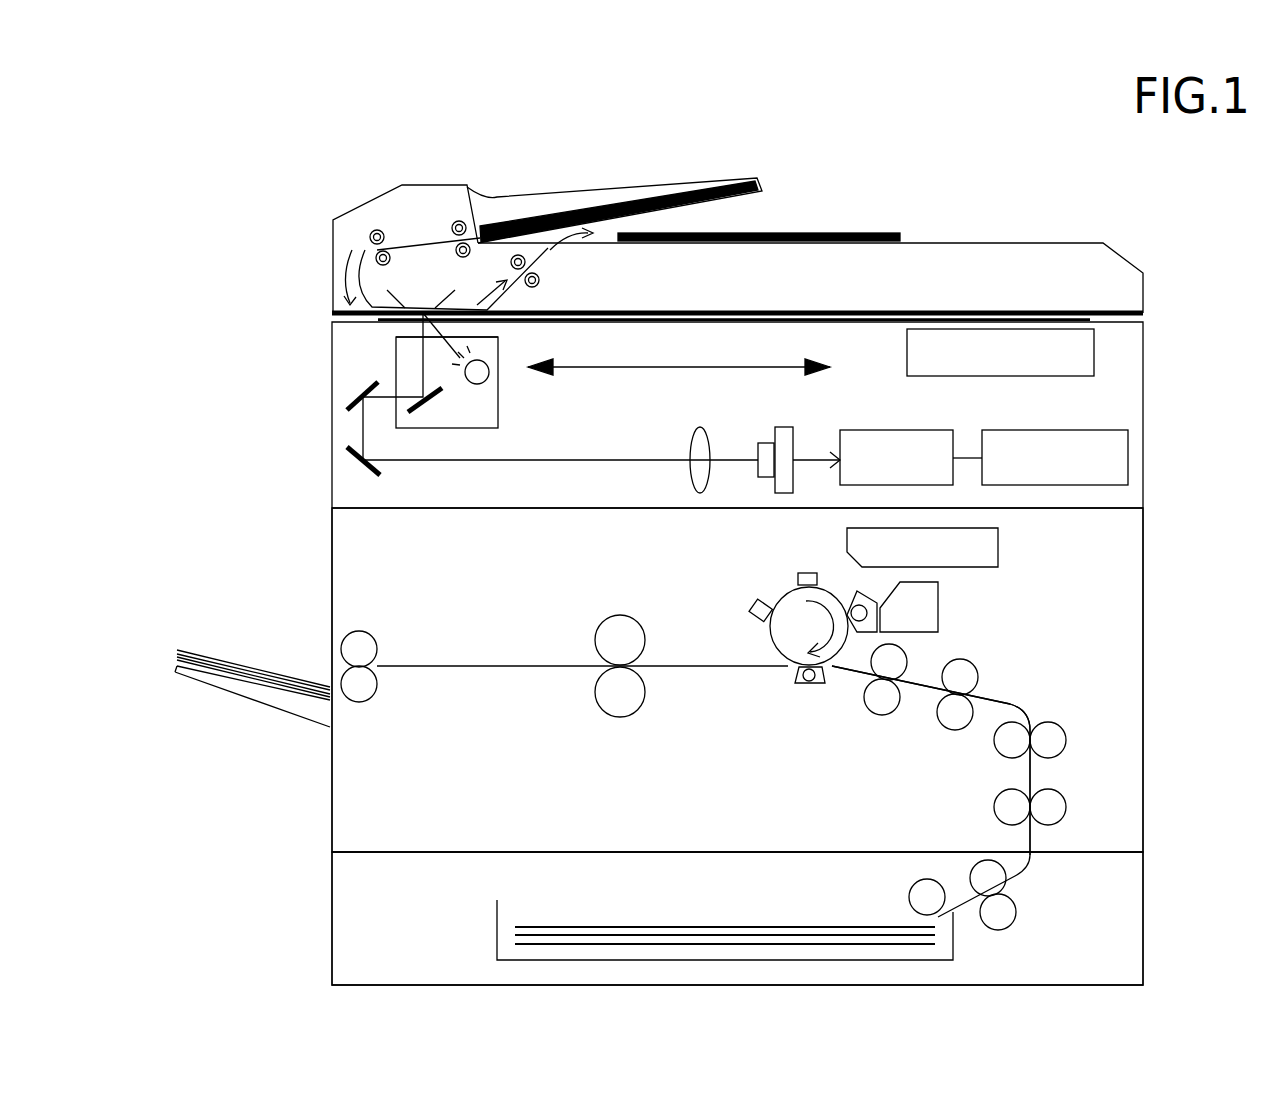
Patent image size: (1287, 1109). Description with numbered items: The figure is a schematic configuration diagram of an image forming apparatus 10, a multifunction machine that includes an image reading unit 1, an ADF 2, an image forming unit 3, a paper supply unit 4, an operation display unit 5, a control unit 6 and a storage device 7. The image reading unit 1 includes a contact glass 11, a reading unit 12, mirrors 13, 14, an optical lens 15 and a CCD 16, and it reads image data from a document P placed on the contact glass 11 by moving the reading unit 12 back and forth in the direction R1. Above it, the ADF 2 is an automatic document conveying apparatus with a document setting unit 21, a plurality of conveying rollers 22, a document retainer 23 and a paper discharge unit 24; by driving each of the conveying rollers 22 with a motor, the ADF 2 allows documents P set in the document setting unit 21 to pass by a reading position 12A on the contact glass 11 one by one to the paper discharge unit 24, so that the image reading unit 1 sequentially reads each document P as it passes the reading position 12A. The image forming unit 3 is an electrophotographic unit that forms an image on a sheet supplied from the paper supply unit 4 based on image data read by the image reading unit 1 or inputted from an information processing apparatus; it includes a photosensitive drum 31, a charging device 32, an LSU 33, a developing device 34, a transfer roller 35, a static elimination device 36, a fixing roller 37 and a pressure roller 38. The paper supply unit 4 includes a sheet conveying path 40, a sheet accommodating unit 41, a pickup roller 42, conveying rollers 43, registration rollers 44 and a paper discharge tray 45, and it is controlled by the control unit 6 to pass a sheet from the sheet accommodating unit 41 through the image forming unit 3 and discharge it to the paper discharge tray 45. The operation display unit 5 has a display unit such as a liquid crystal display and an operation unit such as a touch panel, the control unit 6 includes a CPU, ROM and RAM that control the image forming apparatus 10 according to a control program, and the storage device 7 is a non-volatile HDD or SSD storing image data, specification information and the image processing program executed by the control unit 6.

The image forming apparatus 10 is at (212, 114).
The image reading unit 1 is at (1160, 420).
The ADF 2 is at (1088, 222).
The image forming unit 3 is at (1162, 577).
The paper supply unit 4 is at (1187, 878).
The operation display unit 5 is at (1094, 343).
The control unit 6 is at (930, 430).
The storage device 7 is at (1108, 430).
The contact glass 11 is at (862, 325).
The reading unit 12 is at (498, 340).
The reading position 12A is at (410, 330).
The mirror 13 is at (345, 400).
The mirror 14 is at (348, 463).
The optical lens 15 is at (690, 432).
The CCD 16 is at (783, 427).
The document setting unit 21 is at (668, 184).
The conveying rollers 22 is at (371, 226).
The document retainer 23 is at (422, 307).
The paper discharge unit 24 is at (745, 244).
The photosensitive drum 31 is at (768, 642).
The charging device 32 is at (798, 578).
The LSU 33 is at (958, 567).
The developing device 34 is at (853, 600).
The transfer roller 35 is at (818, 690).
The static elimination device 36 is at (750, 604).
The fixing roller 37 is at (620, 615).
The pressure roller 38 is at (598, 702).
The sheet conveying path 40 is at (990, 703).
The sheet accommodating unit 41 is at (497, 935).
The pickup roller 42 is at (910, 897).
The conveying rollers 43 is at (982, 685).
The registration rollers 44 is at (881, 715).
The paper discharge tray 45 is at (230, 690).
The document P is at (617, 205).
The direction R1 is at (595, 368).